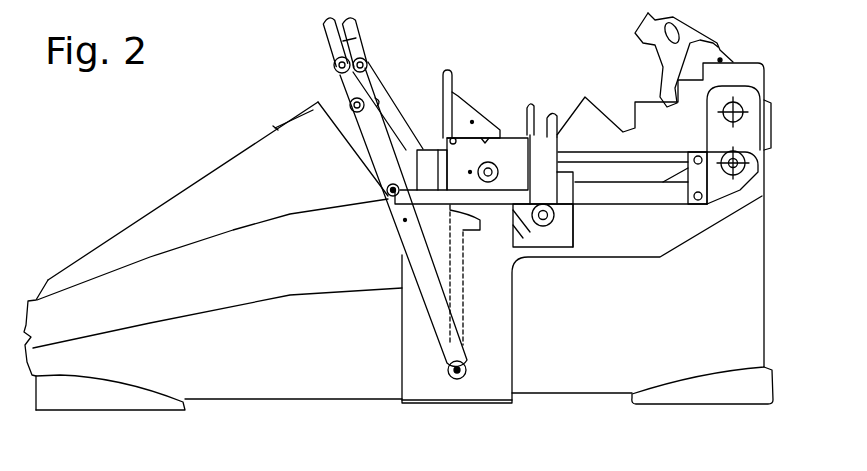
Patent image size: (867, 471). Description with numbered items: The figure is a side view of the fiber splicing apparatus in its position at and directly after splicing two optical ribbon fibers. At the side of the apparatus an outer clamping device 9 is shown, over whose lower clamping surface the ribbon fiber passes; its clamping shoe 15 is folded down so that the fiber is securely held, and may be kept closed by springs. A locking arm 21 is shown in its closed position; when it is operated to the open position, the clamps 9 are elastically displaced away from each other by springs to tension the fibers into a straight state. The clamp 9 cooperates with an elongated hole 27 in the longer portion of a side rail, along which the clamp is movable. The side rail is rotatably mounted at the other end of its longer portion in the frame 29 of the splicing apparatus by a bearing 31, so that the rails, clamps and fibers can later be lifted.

The outer clamping device 9 is at (496, 93).
The clamping shoe 15 is at (447, 103).
The locking arm 21 is at (552, 138).
The elongated hole 27 is at (648, 172).
The frame 29 is at (765, 302).
The bearing 31 is at (745, 163).